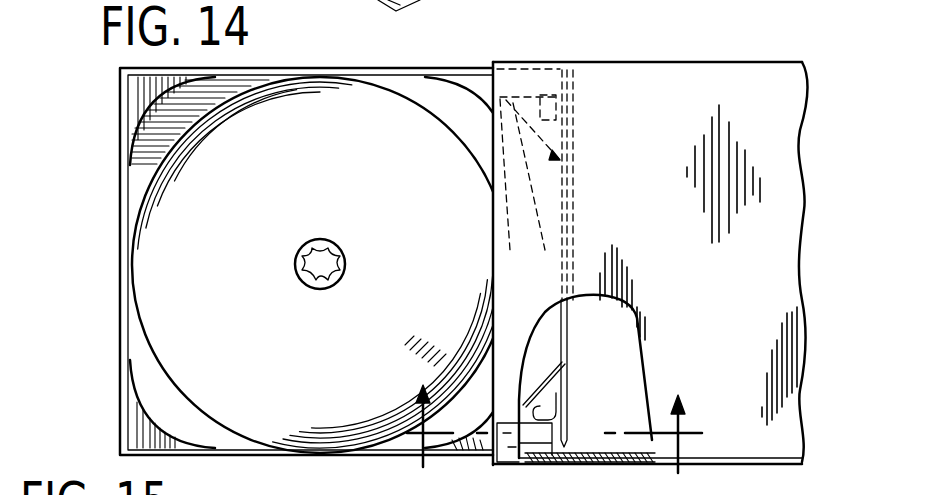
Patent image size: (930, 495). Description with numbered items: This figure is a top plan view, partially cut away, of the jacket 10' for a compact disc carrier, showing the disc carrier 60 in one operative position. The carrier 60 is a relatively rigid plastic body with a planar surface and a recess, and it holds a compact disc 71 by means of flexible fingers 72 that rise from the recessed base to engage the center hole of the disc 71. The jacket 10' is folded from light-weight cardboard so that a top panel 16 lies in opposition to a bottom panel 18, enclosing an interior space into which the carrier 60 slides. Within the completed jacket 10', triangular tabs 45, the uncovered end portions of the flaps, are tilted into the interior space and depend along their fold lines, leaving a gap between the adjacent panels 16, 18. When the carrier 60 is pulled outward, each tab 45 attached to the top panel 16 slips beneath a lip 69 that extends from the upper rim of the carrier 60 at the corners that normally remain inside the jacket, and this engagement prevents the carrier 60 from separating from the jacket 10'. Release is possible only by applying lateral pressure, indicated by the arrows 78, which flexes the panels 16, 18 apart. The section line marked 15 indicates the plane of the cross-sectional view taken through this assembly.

The jacket 10' is at (650, 263).
The section line 15- 15 is at (552, 440).
The top panel 16 is at (761, 280).
The bottom panel 18 is at (614, 338).
The triangular tab 45 is at (540, 62).
The disc carrier 60 is at (121, 172).
The lip 69 is at (572, 137).
The compact disc 71 is at (340, 190).
The flexible fingers 72 is at (330, 256).
The arrows indicating lateral pressure 78 is at (701, 62).